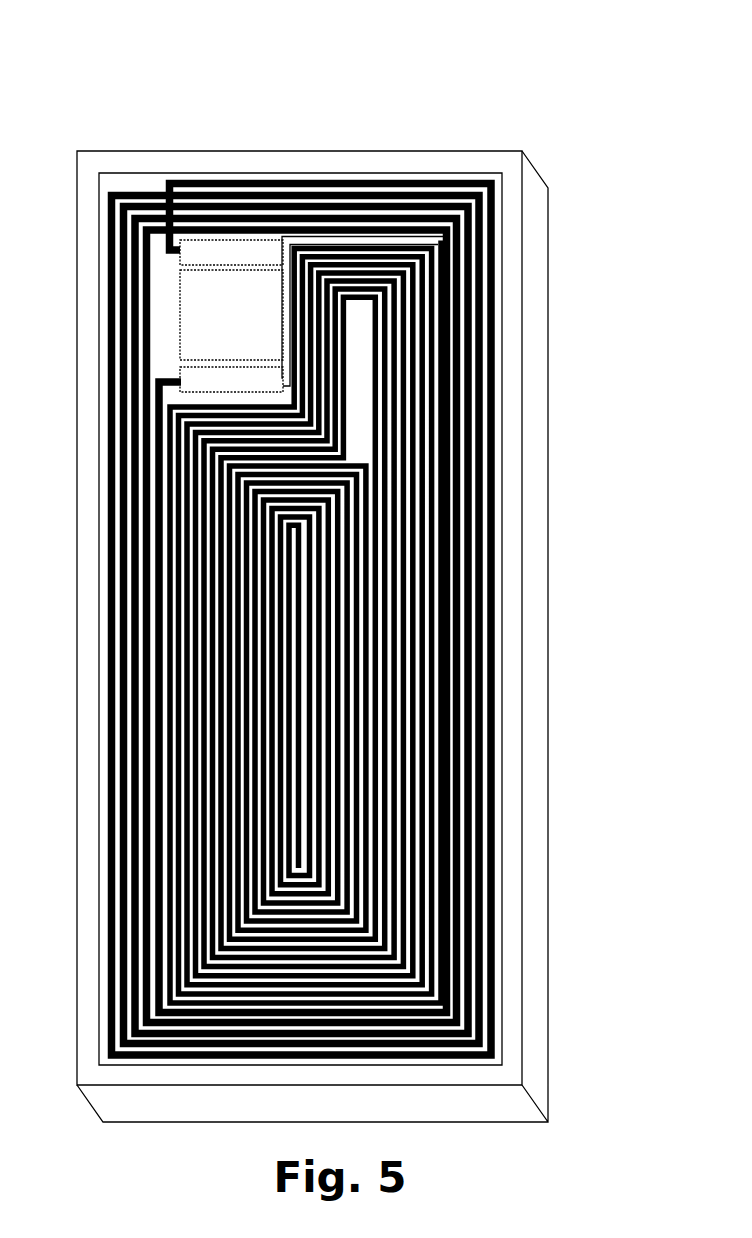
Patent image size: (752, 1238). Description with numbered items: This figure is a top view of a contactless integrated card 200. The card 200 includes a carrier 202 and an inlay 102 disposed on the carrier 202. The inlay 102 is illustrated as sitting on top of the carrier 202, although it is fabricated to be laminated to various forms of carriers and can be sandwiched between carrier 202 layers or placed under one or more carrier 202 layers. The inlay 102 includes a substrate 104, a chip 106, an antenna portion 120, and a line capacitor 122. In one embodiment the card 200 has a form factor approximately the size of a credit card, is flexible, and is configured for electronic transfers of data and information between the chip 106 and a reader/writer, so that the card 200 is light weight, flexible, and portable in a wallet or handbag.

The contactless integrated card 200 is at (359, 564).
The carrier 202 is at (538, 233).
The inlay 102 is at (353, 577).
The substrate 104 is at (353, 576).
The chip 106 is at (249, 323).
The antenna portion 120 is at (135, 188).
The line capacitor 122 is at (356, 443).